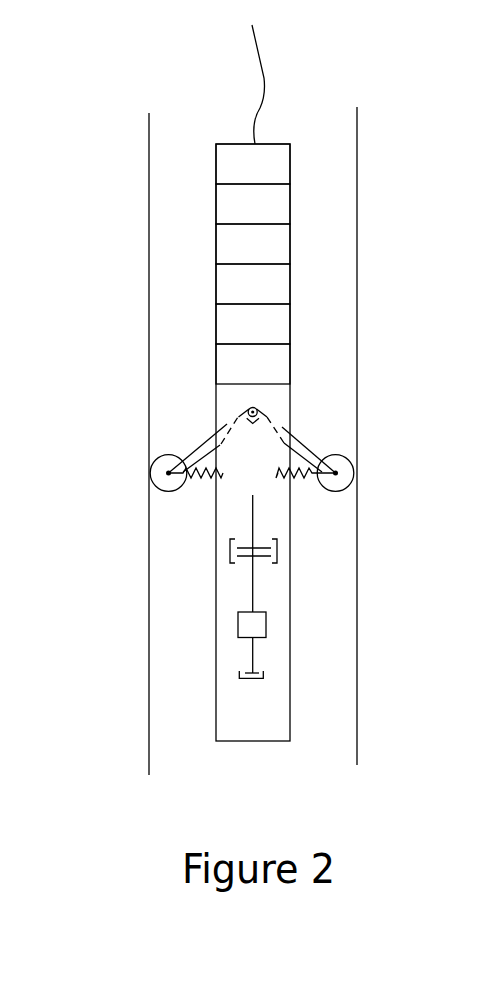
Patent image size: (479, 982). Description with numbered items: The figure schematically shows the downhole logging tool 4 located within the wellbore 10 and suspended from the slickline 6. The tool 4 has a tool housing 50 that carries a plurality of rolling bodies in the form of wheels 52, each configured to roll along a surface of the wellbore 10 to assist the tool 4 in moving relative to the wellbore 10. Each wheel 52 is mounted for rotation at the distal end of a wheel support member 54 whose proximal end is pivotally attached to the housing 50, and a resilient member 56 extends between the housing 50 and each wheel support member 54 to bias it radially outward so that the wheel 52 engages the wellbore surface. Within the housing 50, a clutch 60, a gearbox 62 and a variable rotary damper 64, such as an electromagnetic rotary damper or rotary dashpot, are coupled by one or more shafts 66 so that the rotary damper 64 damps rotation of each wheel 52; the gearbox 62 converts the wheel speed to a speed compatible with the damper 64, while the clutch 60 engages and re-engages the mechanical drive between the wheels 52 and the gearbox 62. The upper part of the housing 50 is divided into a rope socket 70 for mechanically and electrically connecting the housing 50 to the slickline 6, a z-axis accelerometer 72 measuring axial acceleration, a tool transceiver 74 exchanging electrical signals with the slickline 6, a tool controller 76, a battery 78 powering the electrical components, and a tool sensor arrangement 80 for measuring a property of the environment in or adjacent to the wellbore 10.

The tool 4 is at (184, 631).
The slickline 6 is at (264, 84).
The wellbore 10 is at (357, 185).
The tool housing 50 is at (290, 702).
The wheel 52 is at (337, 455).
The wheel support member 54 is at (311, 445).
The resilient member 56 is at (302, 476).
The clutch 60 is at (277, 563).
The gearbox 62 is at (267, 629).
The variable rotary damper 64 is at (269, 675).
The shaft 66 is at (257, 594).
The rope socket 70 is at (225, 164).
The z-axis accelerometer 72 is at (235, 206).
The tool transceiver 74 is at (235, 247).
The tool controller 76 is at (235, 285).
The battery 78 is at (235, 326).
The tool sensor arrangement 80 is at (235, 366).